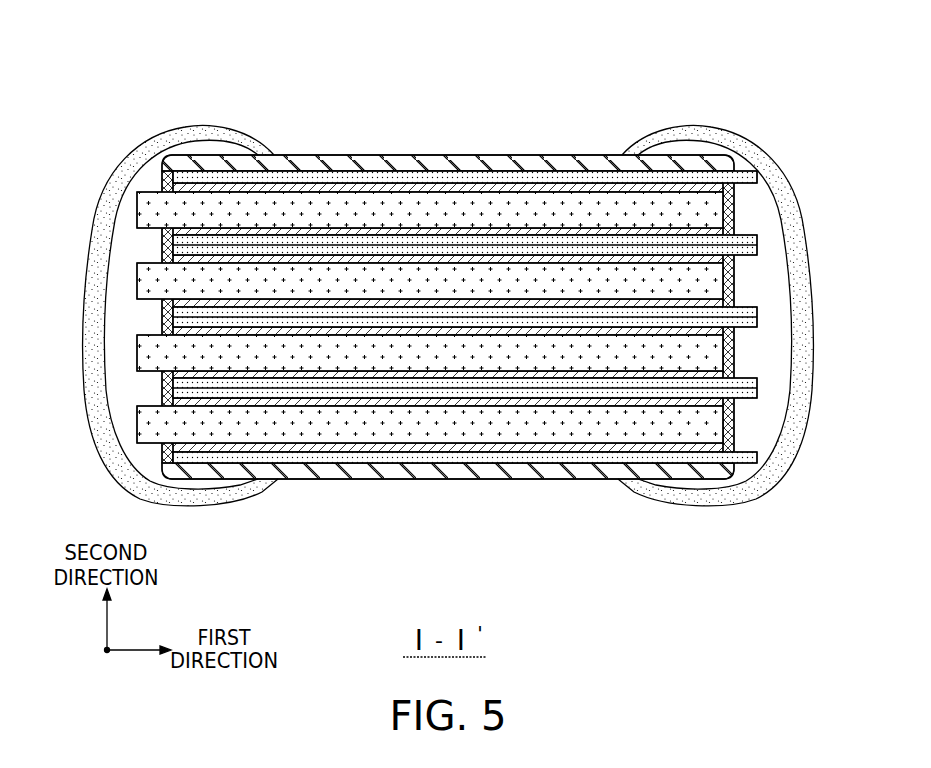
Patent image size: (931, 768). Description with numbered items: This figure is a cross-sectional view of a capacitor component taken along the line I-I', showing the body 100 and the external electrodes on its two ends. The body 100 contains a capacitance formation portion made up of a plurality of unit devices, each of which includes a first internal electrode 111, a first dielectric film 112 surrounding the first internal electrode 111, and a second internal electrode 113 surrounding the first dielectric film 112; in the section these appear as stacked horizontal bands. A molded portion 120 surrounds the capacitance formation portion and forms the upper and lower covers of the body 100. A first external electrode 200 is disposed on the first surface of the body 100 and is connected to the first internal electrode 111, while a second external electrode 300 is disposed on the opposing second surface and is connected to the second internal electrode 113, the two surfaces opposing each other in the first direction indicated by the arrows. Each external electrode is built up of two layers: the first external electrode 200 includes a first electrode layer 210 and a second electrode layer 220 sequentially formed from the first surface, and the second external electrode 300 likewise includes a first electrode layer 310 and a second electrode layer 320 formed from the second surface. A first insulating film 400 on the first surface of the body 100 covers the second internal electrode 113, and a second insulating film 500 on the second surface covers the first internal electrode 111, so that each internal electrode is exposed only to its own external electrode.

The body 100 is at (448, 271).
The first internal electrode 111 is at (513, 208).
The first dielectric film 112 is at (550, 189).
The second internal electrode 113 is at (590, 178).
The molded portion 120 is at (418, 164).
The first external electrode 200 is at (180, 266).
The first electrode layer 210 is at (147, 168).
The second electrode layer 220 is at (112, 166).
The second external electrode 300 is at (716, 266).
The first electrode layer 310 is at (748, 168).
The second electrode layer 320 is at (783, 158).
The first insulating film 400 is at (160, 247).
The second insulating film 500 is at (733, 216).